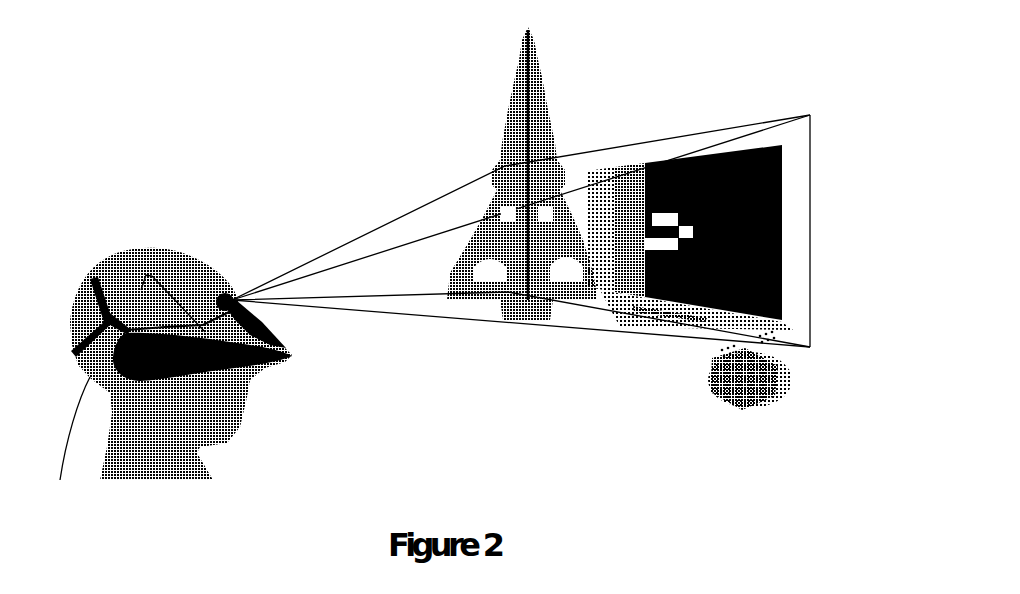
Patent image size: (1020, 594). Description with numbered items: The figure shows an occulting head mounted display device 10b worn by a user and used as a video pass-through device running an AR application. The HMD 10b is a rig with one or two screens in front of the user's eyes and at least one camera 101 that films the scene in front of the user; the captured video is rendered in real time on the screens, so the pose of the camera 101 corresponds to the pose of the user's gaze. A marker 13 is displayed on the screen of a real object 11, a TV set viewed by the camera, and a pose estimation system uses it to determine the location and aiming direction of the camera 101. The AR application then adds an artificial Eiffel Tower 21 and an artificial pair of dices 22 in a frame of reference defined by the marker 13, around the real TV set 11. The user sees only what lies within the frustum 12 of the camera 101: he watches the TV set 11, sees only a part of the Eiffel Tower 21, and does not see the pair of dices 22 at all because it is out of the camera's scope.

The head mounted display device 10b is at (141, 290).
The camera 101 is at (233, 299).
The frustum 12 is at (443, 193).
The artificial Eiffel Tower 21 is at (513, 120).
The real object 11 is at (782, 240).
The marker 13 is at (592, 250).
The artificial pair of dices 22 is at (732, 413).